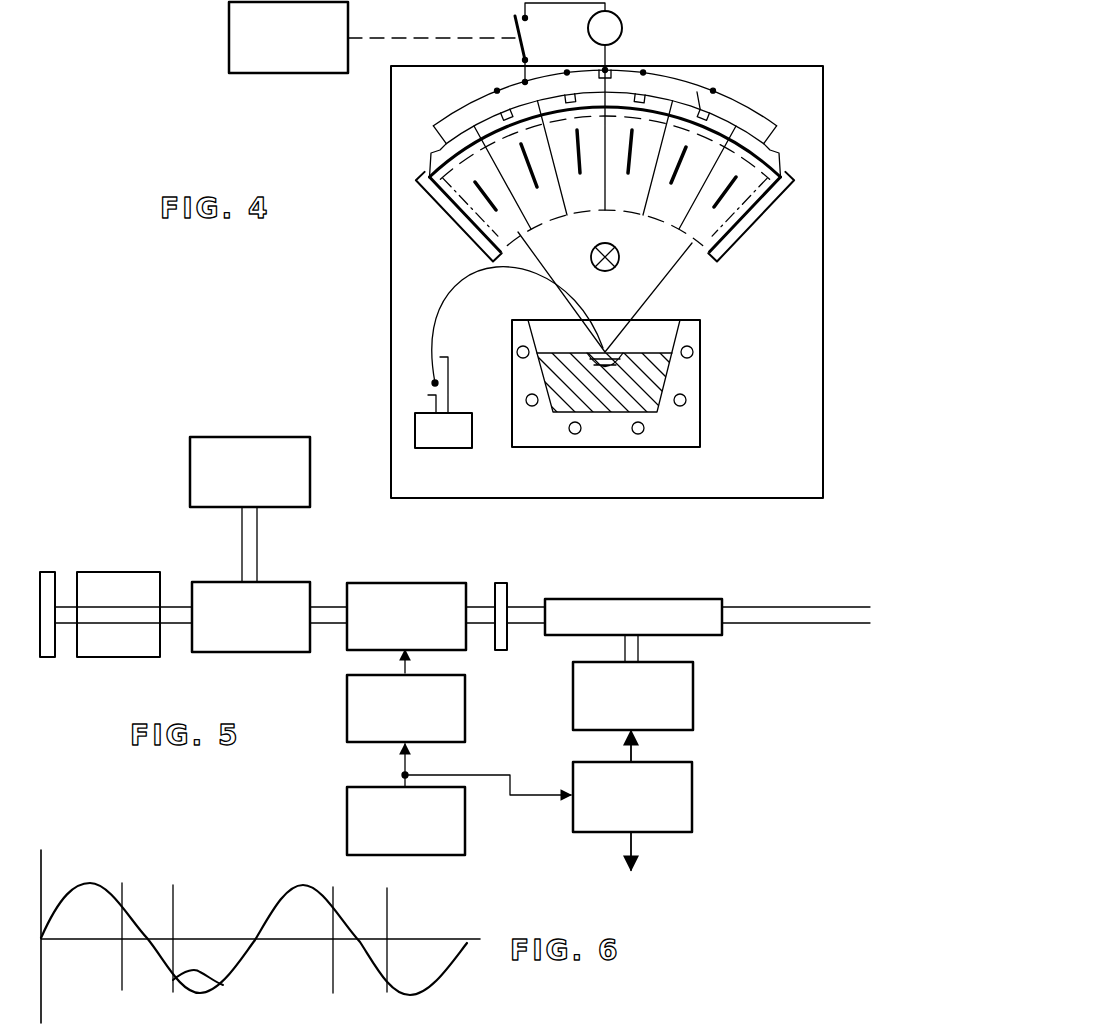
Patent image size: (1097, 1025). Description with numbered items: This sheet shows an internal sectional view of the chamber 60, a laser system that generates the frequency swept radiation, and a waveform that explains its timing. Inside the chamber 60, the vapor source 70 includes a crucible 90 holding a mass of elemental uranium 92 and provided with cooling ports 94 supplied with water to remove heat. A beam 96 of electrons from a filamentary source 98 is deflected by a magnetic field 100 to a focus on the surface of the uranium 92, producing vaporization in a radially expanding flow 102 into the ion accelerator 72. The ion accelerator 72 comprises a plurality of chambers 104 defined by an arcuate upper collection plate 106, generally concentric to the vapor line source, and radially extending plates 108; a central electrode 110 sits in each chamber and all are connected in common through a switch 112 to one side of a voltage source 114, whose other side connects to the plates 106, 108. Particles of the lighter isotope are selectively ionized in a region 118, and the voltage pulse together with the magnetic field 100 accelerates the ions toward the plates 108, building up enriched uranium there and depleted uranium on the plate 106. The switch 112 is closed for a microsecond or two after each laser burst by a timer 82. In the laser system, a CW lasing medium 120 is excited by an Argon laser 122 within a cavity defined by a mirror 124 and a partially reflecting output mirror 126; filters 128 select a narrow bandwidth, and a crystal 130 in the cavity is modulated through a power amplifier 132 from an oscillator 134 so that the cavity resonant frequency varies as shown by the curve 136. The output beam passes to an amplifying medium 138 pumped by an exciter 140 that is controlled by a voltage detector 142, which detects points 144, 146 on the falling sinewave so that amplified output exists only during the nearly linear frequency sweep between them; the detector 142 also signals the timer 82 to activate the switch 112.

In FIG. 4, the chamber 60 is at (823, 90).
In FIG. 4, the vapor source 70 is at (716, 390).
In FIG. 4, the ion accelerator 72 is at (425, 148).
In FIG. 4, the timer 82 is at (229, 25).
In FIG. 4, the crucible 90 is at (692, 337).
In FIG. 4, the elemental uranium 92 is at (623, 350).
In FIG. 4, the cooling ports 94 is at (642, 434).
In FIG. 4, the beam of electrons 96 is at (458, 276).
In FIG. 4, the filamentary source 98 is at (435, 383).
In FIG. 4, the magnetic field 100 is at (620, 246).
In FIG. 4, the radially expanding flow 102 is at (655, 278).
In FIG. 4, the chambers 104 is at (456, 110).
In FIG. 4, the arcuate upper collection plate 106 is at (695, 82).
In FIG. 4, the radially extending plates 108 is at (462, 212).
In FIG. 4, the central electrode 110 is at (497, 212).
In FIG. 4, the switch 112 is at (515, 22).
In FIG. 4, the voltage source 114 is at (622, 22).
In FIG. 4, the region 118 is at (760, 225).
In FIG. 5, the CW lasing medium 120 is at (275, 582).
In FIG. 5, the Argon laser 122 is at (207, 437).
In FIG. 5, the mirror 124 is at (48, 572).
In FIG. 5, the partially reflecting output mirror 126 is at (500, 583).
In FIG. 5, the filters 128 is at (110, 572).
In FIG. 5, the crystal 130 is at (385, 583).
In FIG. 5, the power amplifier 132 is at (347, 720).
In FIG. 5, the oscillator 134 is at (465, 843).
In FIG. 6, the curve 136 is at (67, 887).
In FIG. 5, the amplifying medium 138 is at (605, 599).
In FIG. 5, the exciter 140 is at (693, 705).
In FIG. 5, the voltage detector 142 is at (693, 793).
In FIG. 6, the point 144 is at (120, 897).
In FIG. 6, the point 146 is at (223, 985).